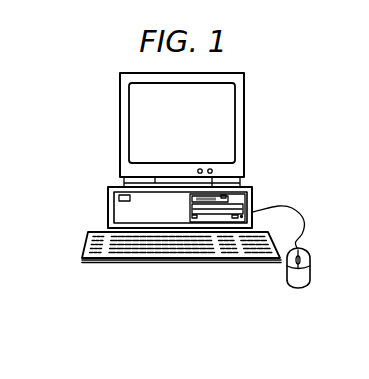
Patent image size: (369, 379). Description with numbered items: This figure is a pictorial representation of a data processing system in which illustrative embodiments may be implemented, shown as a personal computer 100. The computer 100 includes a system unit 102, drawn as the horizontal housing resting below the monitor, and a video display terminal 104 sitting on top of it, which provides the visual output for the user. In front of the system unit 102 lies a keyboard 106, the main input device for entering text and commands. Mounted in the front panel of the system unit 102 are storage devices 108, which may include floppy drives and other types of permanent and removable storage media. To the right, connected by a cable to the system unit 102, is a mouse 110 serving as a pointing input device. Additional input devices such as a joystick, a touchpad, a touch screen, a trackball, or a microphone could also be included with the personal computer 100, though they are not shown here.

The computer 100 is at (65, 113).
The system unit 102 is at (108, 206).
The video display terminal 104 is at (244, 125).
The keyboard 106 is at (105, 264).
The storage devices 108 is at (227, 199).
The mouse 110 is at (298, 288).